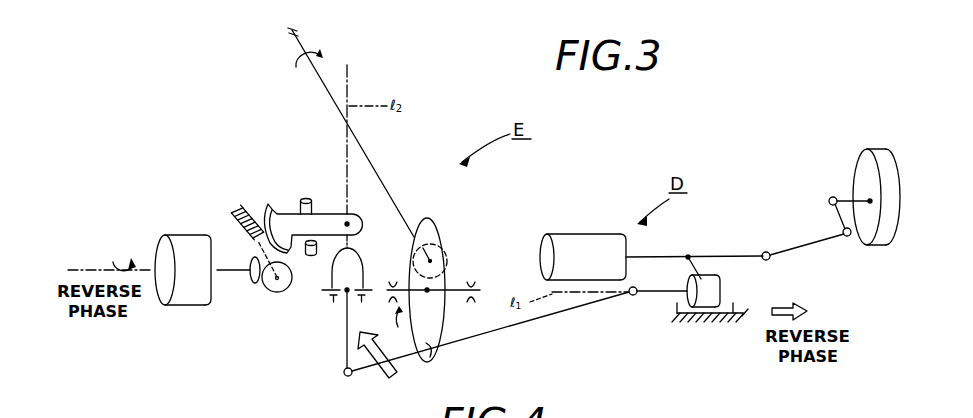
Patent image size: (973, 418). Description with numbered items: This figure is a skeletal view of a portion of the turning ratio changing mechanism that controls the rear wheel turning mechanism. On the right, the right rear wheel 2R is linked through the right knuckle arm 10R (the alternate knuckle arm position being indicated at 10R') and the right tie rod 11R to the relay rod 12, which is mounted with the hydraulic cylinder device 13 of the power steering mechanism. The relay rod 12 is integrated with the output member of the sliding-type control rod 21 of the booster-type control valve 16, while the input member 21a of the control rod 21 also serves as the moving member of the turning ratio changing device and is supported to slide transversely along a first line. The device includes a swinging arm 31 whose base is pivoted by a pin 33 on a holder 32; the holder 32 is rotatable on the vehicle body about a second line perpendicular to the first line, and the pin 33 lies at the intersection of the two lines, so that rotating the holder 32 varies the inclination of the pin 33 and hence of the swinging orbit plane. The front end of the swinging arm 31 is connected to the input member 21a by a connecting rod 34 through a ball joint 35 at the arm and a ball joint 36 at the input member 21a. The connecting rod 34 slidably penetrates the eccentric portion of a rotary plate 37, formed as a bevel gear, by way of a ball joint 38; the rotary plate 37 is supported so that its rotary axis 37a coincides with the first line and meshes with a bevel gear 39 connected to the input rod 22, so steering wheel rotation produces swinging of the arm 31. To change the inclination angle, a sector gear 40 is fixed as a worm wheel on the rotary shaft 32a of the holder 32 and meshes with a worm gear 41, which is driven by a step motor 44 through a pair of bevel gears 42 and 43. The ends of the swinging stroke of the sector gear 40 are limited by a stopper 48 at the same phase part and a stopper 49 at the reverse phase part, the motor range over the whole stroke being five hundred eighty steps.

The step motor 44 is at (193, 294).
The bevel gear 43 is at (253, 282).
The bevel gear 42 is at (273, 291).
The worm gear 41 is at (233, 211).
The sector gear 40 is at (273, 210).
The stopper 48 is at (307, 198).
The stopper 49 is at (310, 263).
The rotary shaft 32a is at (360, 233).
The holder 32 is at (363, 271).
The pin 33 is at (340, 294).
The swinging arm 31 is at (347, 323).
The ball joint 35 is at (345, 375).
The connecting rod 34 is at (505, 330).
The input rod 22 is at (385, 184).
The bevel gear 39 is at (441, 240).
The rotary plate 37 is at (445, 313).
The rotary axis 37a is at (457, 282).
The ball joint 38 is at (436, 353).
The ball joint 36 is at (628, 295).
The cylinder device 13 is at (582, 233).
The relay rod 12 is at (722, 256).
The control rod 21 is at (702, 268).
The input member 21a is at (653, 294).
The control valve 16 is at (708, 297).
The right tie rod 11R is at (818, 244).
The right knuckle arm 10R is at (818, 213).
The pin position 10R' is at (798, 164).
The right rear wheel 2R is at (896, 196).